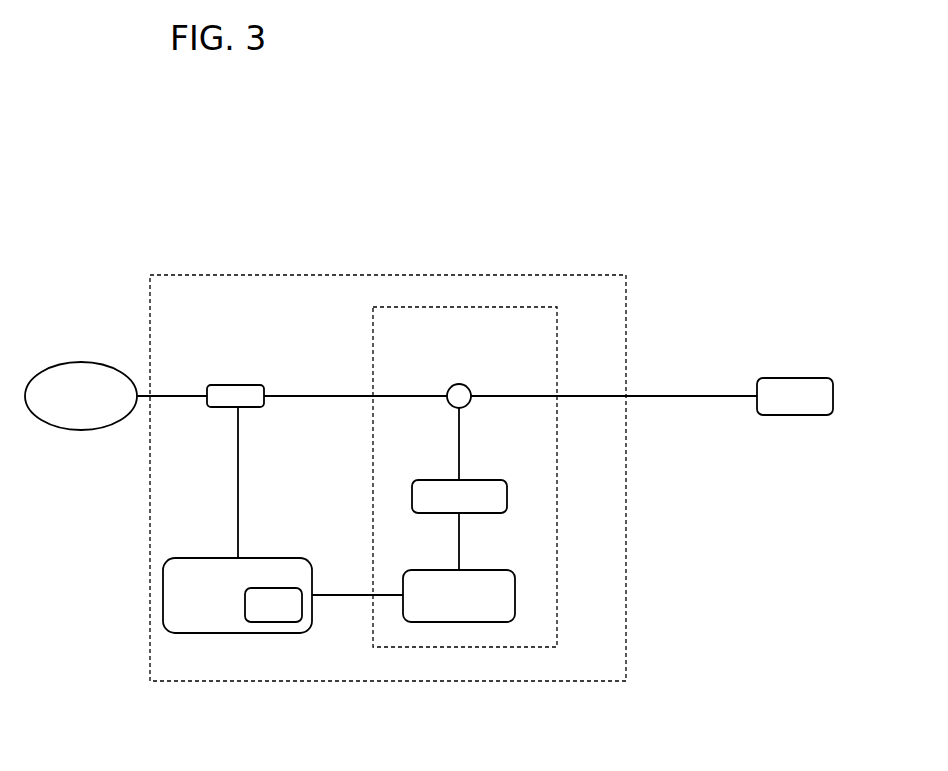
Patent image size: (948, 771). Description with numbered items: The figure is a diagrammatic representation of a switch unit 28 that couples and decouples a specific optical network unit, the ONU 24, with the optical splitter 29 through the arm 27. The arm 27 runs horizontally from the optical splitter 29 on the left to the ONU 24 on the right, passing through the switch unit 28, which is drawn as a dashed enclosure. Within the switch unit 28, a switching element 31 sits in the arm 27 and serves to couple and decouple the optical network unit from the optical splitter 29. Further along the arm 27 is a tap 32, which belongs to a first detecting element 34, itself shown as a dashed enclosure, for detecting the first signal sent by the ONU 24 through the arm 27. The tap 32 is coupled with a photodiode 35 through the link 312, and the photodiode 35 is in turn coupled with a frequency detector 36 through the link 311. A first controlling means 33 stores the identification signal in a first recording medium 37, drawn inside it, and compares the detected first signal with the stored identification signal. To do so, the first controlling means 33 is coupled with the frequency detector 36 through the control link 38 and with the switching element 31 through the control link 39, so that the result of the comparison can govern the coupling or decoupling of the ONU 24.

The optical network unit (ONU) 24 is at (833, 384).
The arm 27 is at (662, 396).
The switch unit 28 is at (336, 682).
The optical splitter 29 is at (65, 430).
The switching element 31 is at (233, 385).
The tap 32 is at (461, 385).
The first controlling means 33 is at (265, 558).
The first detecting element 34 is at (557, 595).
The photodiode 35 is at (507, 483).
The frequency detector 36 is at (512, 572).
The first recording medium 37 is at (245, 606).
The control link 38 is at (320, 595).
The control link 39 is at (239, 480).
The link 311 is at (459, 560).
The link 312 is at (462, 455).